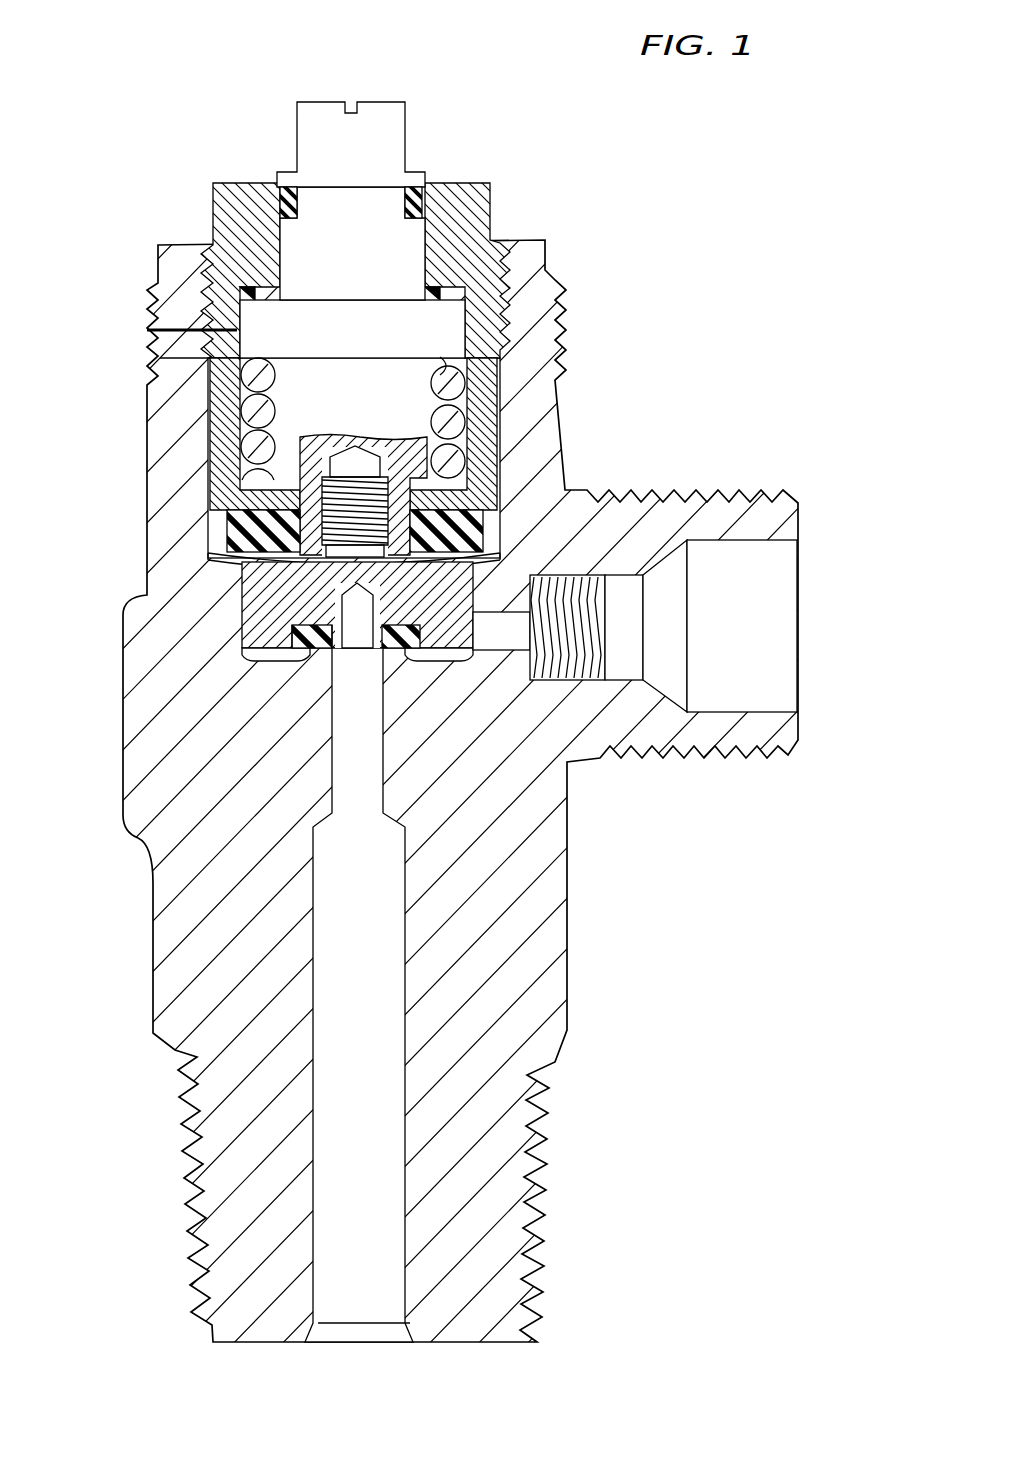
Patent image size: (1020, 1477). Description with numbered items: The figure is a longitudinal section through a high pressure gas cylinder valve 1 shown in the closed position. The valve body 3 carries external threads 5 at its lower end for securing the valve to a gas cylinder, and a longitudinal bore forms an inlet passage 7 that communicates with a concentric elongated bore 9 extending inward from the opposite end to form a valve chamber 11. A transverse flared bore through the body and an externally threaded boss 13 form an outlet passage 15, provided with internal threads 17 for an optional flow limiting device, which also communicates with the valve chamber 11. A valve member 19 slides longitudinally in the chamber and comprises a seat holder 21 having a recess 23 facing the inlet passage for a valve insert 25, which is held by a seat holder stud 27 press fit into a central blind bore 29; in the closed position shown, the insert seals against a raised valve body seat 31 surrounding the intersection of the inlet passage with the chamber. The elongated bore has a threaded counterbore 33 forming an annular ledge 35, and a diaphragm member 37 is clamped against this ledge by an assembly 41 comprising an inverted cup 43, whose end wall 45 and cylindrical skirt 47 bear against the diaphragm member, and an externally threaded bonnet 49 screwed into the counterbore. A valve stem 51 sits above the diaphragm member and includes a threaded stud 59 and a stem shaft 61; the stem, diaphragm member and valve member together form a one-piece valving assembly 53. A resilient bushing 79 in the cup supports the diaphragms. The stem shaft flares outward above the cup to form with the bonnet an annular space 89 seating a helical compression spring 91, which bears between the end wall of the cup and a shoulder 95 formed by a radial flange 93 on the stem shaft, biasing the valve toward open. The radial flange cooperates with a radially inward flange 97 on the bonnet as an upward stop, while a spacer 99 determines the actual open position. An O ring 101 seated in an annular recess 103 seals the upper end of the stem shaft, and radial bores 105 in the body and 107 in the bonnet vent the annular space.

The high pressure gas cylinder valve 1 is at (143, 166).
The valve body 3 is at (123, 826).
The external threads 5 is at (183, 1183).
The inlet passage 7 is at (332, 796).
The elongated bore 9 is at (246, 609).
The valve chamber 11 is at (312, 650).
The externally threaded boss 13 is at (690, 490).
The outlet passage 15 is at (636, 585).
The internal threads 17 is at (588, 658).
The valve member 19 is at (232, 638).
The seat holder 21 is at (282, 657).
The recess 23 is at (312, 640).
The valve insert 25 is at (325, 640).
The seat holder stud 27 is at (354, 640).
The central blind bore 29 is at (374, 598).
The raised valve body seat 31 is at (395, 656).
The threaded counterbore 33 is at (508, 356).
The annular ledge 35 is at (470, 612).
The diaphragm member 37 is at (416, 641).
The assembly 41 is at (512, 398).
The inverted cup 43 is at (487, 502).
The end wall 45 is at (298, 470).
The cylindrical skirt 47 is at (220, 518).
The externally threaded bonnet 49 is at (225, 392).
The valve stem 51 is at (448, 458).
The one-piece valving assembly 53 is at (205, 570).
The threaded stud 59 is at (349, 500).
The stem shaft 61 is at (287, 407).
The resilient bushing 79 is at (240, 534).
The annular space 89 is at (440, 412).
The helical compression spring 91 is at (441, 386).
The radial flange 93 is at (366, 300).
The shoulder 95 is at (446, 368).
The radially inward flange 97 is at (236, 246).
The spacer 99 is at (438, 290).
The O ring 101 is at (288, 196).
The annular recess 103 is at (375, 198).
The radial bore 105 is at (147, 330).
The radial bore 107 is at (260, 340).